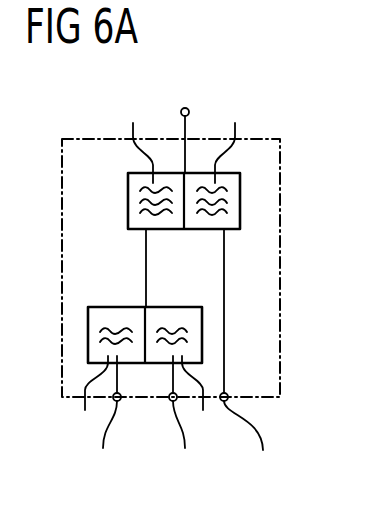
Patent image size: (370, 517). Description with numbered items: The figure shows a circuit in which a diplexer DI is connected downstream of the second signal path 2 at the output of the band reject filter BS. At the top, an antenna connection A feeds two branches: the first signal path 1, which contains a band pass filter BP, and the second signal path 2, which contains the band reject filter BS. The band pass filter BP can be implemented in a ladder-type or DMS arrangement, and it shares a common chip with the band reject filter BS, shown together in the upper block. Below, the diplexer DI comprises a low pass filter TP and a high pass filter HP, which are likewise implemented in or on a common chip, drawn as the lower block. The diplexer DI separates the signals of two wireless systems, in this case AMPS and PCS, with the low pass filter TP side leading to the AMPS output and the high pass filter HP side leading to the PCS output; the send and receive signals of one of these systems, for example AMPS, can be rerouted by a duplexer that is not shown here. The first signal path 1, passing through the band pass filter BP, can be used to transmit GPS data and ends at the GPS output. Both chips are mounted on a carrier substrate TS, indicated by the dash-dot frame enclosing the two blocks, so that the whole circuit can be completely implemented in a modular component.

The first signal path 1 is at (224, 278).
The second signal path 2 is at (146, 273).
The antenna connection A is at (185, 119).
The band reject filter BS is at (136, 135).
The band pass filter BP is at (230, 135).
The carrier substrate TS is at (280, 228).
The diplexer DI is at (222, 340).
The low pass filter TP is at (89, 402).
The high pass filter HP is at (202, 402).
The AMPS wireless system signals AMPS is at (105, 420).
The PCS wireless system signals PCS is at (186, 420).
The GPS data GPS is at (255, 439).